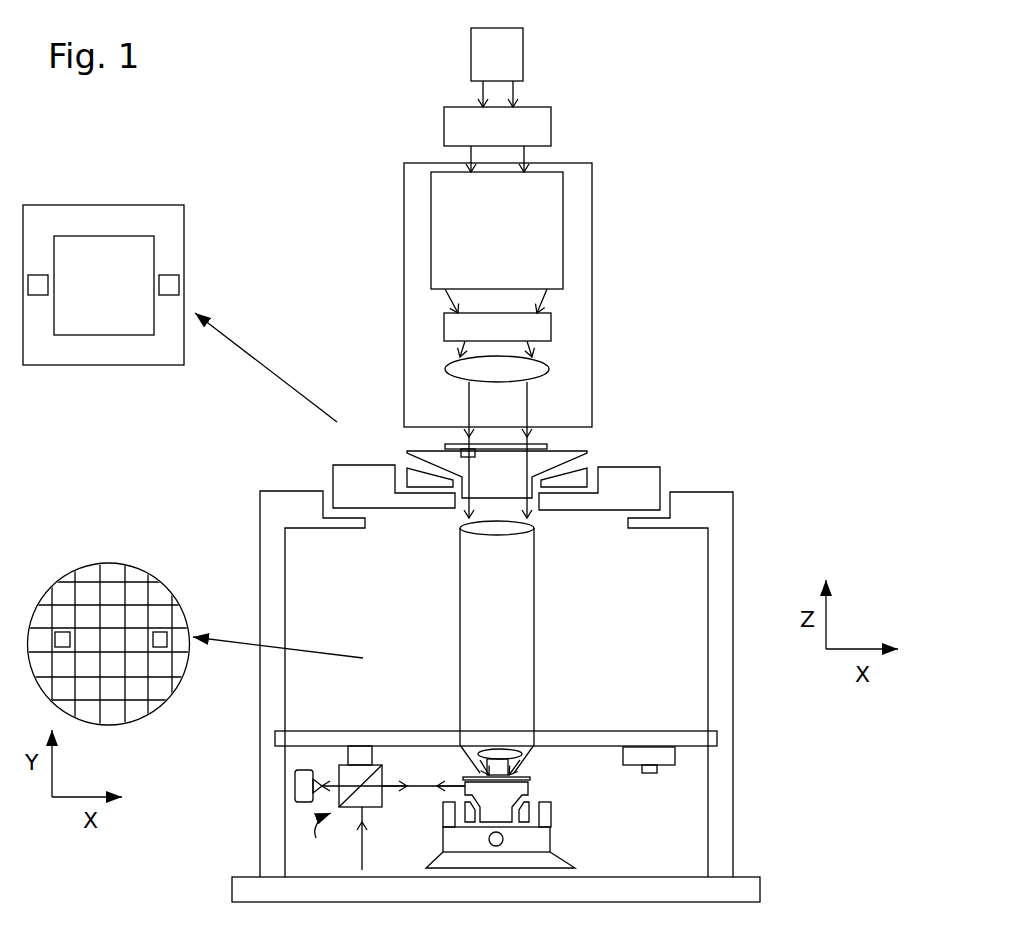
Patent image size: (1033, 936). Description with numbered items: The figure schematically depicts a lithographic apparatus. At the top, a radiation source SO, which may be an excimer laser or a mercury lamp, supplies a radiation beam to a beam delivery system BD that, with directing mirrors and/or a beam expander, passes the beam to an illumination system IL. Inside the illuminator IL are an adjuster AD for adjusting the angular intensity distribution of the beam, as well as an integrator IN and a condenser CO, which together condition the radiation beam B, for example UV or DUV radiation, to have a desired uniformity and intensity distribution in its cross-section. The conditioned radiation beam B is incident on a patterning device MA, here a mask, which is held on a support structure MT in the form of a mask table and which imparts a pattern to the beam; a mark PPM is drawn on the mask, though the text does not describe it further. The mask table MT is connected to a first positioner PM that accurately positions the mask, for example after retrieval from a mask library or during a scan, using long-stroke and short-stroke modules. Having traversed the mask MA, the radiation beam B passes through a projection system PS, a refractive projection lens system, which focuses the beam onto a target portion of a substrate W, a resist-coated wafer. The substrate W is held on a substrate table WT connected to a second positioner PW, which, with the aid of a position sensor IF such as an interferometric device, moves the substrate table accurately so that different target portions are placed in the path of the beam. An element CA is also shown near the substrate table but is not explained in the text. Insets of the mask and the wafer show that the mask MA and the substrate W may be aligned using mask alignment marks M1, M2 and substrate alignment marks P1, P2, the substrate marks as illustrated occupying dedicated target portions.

The radiation source SO is at (523, 58).
The beam delivery system BD is at (551, 133).
The illumination system IL is at (592, 188).
The adjuster AD is at (563, 240).
The integrator IN is at (551, 327).
The condenser CO is at (549, 370).
The radiation beam B is at (500, 437).
The patterning device MA is at (443, 447).
The patterning device position mark PPM is at (461, 452).
The mask alignment mark M1 is at (171, 275).
The mask alignment mark M2 is at (37, 275).
The support structure MT is at (587, 455).
The first positioner PM is at (333, 465).
The projection system PS is at (536, 626).
The substrate W is at (464, 778).
The substrate alignment mark P1 is at (62, 632).
The substrate alignment mark P2 is at (160, 632).
The substrate table WT is at (530, 785).
The second positioner PW is at (552, 845).
The camera / alignment sensor CA is at (675, 758).
The position sensor IF is at (380, 808).